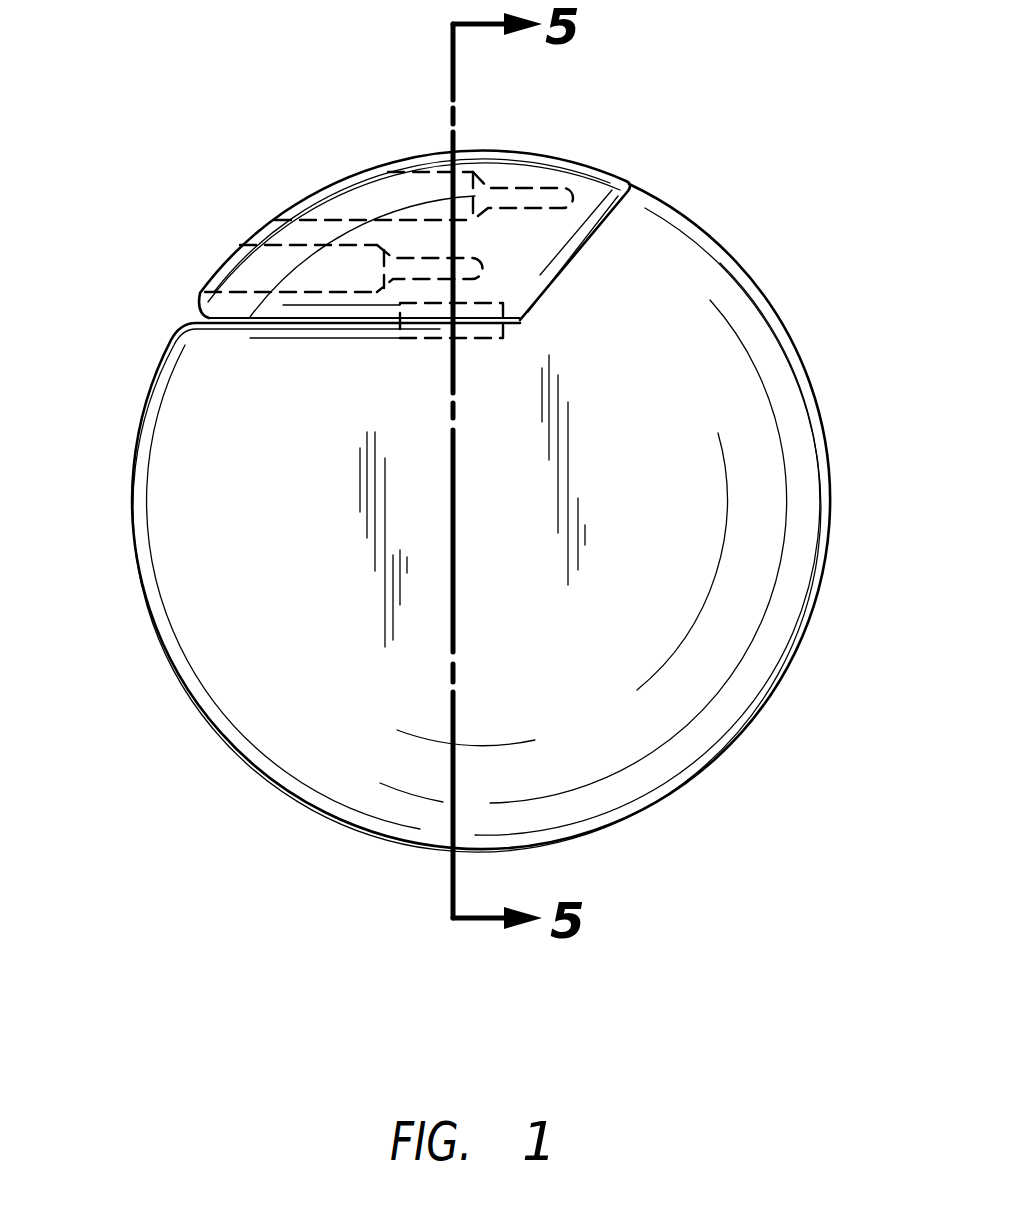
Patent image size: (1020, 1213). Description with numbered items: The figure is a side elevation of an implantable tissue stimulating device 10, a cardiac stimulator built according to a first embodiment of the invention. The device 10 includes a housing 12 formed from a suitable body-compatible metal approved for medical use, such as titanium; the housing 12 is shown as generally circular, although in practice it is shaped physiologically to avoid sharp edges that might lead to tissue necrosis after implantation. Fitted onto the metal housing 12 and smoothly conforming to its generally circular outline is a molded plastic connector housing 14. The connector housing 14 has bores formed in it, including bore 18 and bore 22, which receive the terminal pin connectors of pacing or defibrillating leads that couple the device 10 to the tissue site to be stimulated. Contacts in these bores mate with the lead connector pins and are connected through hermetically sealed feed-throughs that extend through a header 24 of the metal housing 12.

The implantable tissue stimulating device 10 is at (484, 463).
The housing 12 is at (808, 490).
The connector housing 14 is at (521, 148).
The bore 18 is at (428, 185).
The bore 22 is at (268, 258).
The header 24 is at (433, 327).